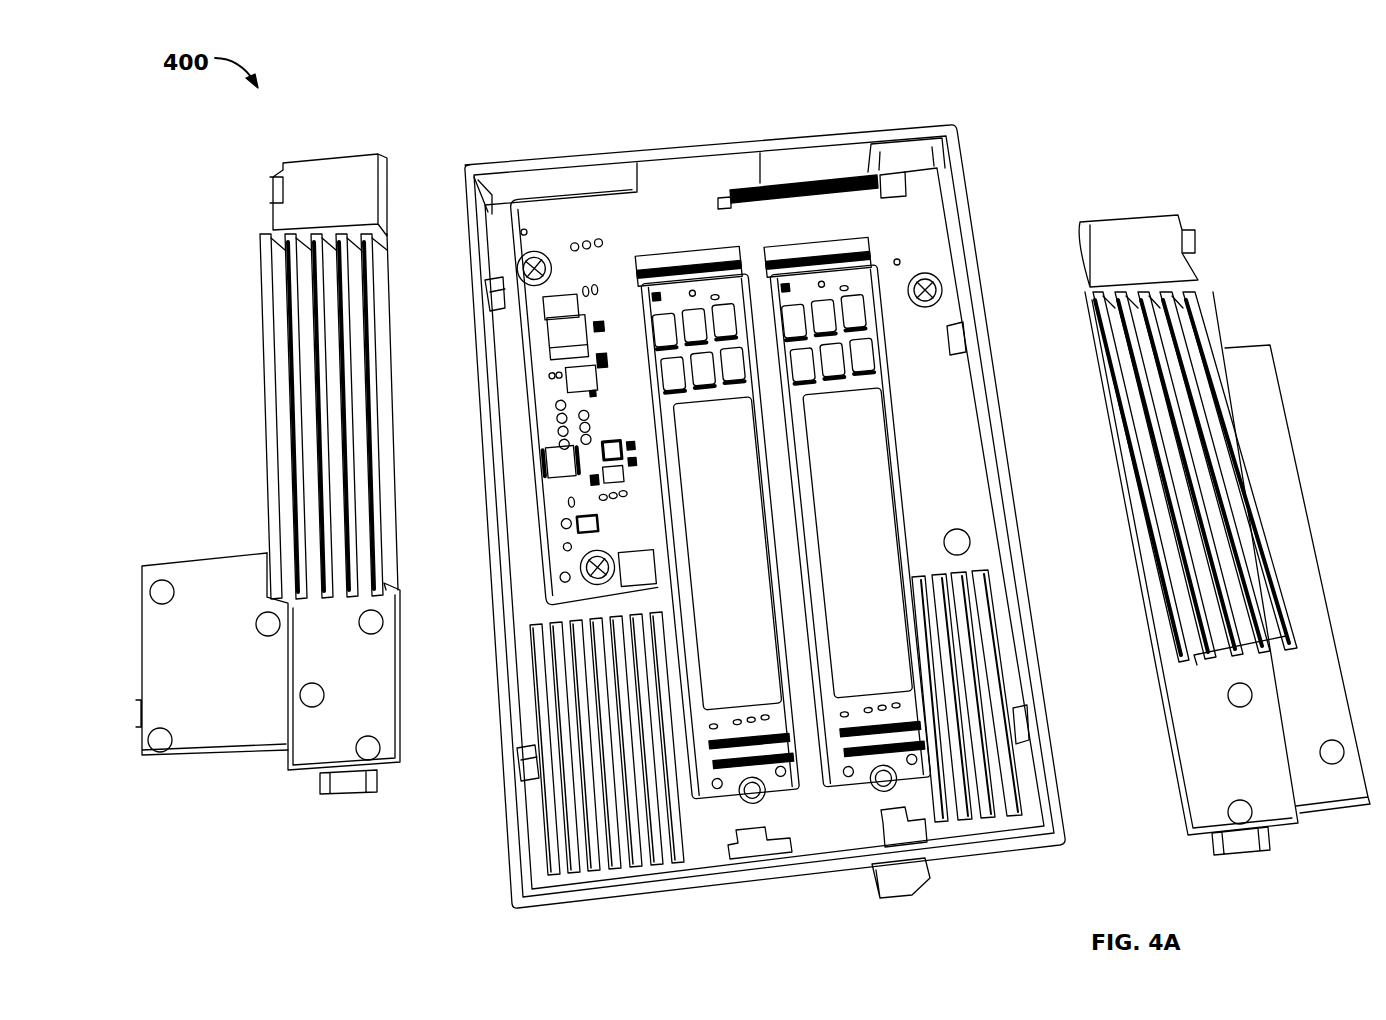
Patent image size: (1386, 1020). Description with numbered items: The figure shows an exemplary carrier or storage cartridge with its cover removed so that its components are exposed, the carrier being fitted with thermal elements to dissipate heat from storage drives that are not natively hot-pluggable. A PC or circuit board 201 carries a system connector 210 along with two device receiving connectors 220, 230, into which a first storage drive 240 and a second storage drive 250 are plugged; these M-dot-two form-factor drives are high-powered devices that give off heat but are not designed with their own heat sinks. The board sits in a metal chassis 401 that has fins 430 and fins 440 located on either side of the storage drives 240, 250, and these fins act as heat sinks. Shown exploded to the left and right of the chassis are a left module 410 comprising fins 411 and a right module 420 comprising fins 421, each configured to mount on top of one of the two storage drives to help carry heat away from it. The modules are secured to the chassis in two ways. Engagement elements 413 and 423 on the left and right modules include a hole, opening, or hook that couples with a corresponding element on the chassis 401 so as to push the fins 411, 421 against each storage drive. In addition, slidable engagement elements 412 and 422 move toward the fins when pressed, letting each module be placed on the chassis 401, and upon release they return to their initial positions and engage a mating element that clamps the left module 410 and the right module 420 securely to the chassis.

The metal chassis 401 is at (922, 123).
The PC or circuit board 201 is at (601, 531).
The system connector 210 is at (765, 195).
The device receiving connector 220 is at (683, 265).
The device receiving connector 230 is at (812, 248).
The storage drive 240 is at (744, 535).
The storage drive 250 is at (874, 530).
The left module 410 is at (205, 565).
The fins 411 is at (268, 355).
The slidable engagement element 412 is at (285, 173).
The engagement element 413 is at (325, 792).
The right module 420 is at (1270, 422).
The fins 421 is at (1215, 320).
The slidable engagement element 422 is at (1175, 228).
The engagement element 423 is at (1262, 853).
The fins 430 is at (540, 715).
The fins 440 is at (1000, 670).